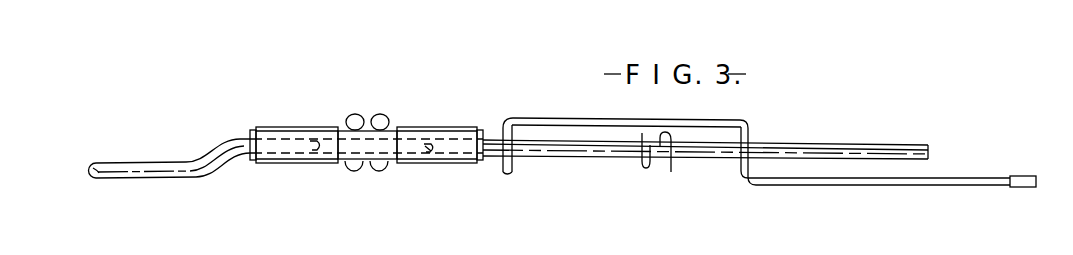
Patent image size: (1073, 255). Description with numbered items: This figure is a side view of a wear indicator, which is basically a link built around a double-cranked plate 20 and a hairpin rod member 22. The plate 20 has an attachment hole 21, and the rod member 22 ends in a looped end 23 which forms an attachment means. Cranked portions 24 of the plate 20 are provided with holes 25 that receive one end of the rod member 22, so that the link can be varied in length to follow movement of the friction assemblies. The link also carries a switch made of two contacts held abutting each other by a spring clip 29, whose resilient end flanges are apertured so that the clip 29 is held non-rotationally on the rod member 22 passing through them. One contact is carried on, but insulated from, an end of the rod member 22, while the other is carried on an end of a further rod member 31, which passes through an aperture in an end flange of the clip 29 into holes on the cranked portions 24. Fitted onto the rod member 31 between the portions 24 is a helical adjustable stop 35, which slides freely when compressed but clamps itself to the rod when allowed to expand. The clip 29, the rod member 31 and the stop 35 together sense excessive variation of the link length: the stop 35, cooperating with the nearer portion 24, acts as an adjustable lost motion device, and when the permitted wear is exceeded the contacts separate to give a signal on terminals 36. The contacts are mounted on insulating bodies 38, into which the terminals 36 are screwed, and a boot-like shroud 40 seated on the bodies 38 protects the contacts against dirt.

The double-cranked plate 20 is at (1019, 181).
The attachment hole 21 is at (977, 177).
The hairpin rod member 22 is at (216, 170).
The looped end 23 is at (141, 180).
The cranked portions 24 is at (508, 173).
The holes 25 is at (512, 122).
The spring clip 29 is at (458, 158).
The further rod member 31 is at (876, 137).
The helical adjustable stop 35 is at (671, 172).
The terminals 36 is at (312, 152).
The insulating bodies 38 is at (289, 126).
The boot-like shroud 40 is at (352, 115).